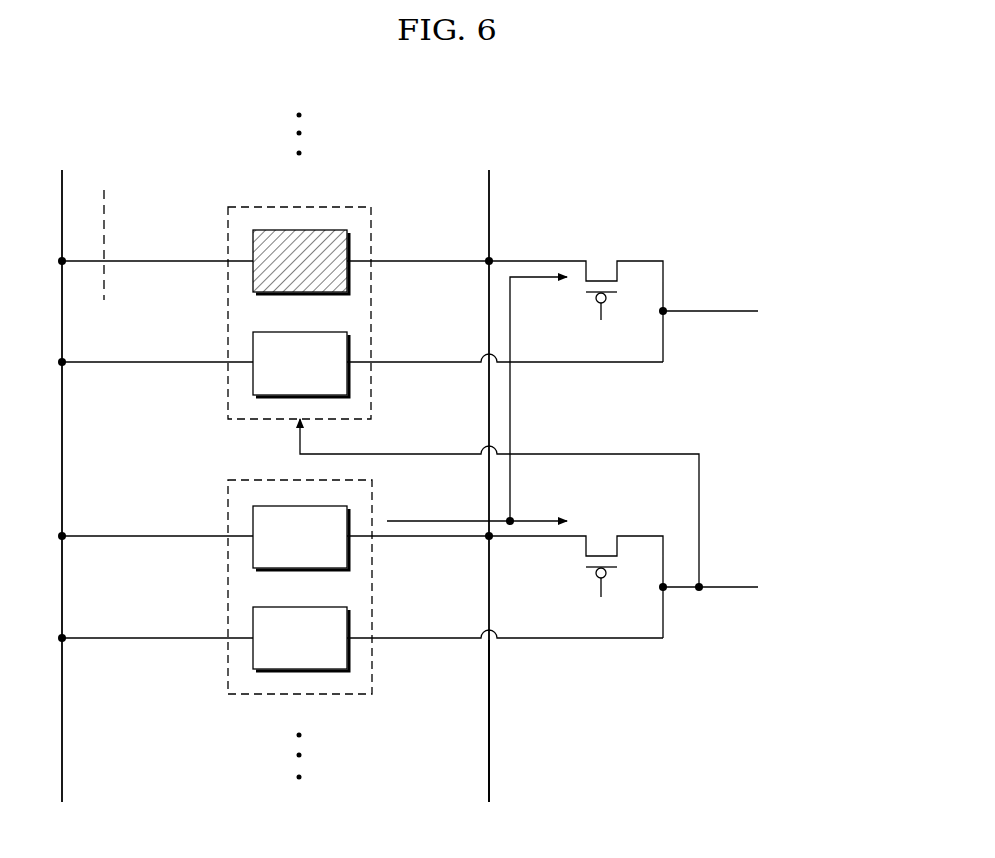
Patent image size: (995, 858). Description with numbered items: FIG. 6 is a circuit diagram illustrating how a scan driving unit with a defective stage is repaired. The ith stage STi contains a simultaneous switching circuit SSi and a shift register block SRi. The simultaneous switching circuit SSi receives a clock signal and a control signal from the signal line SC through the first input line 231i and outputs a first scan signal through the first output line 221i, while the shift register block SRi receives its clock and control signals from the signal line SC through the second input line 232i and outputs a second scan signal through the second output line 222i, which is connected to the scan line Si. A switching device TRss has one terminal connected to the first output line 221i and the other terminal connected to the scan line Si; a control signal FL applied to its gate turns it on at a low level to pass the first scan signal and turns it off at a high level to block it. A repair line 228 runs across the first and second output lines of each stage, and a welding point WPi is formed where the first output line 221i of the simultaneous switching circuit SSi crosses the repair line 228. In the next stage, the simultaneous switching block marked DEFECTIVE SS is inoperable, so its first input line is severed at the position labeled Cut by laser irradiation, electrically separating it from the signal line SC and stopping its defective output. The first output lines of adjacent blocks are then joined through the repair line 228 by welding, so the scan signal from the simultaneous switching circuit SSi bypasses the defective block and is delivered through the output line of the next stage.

The signal line SC is at (276, 470).
The cut portion of first input line Cut is at (104, 232).
The first input line 231i is at (171, 534).
The second input line 232i is at (171, 635).
The first output line 221i is at (428, 540).
The second output line 222i is at (428, 642).
The repair line 228 is at (490, 695).
The ith stage STi is at (300, 694).
The ith simultaneous switching circuit SSi is at (301, 538).
The ith shift register block SRi is at (301, 639).
The defective simultaneous switching block DEFECTIVE SS is at (280, 230).
The welding point WPi is at (490, 538).
The switching device TRss is at (576, 436).
The control signal FL is at (601, 459).
The scan line Si is at (725, 585).